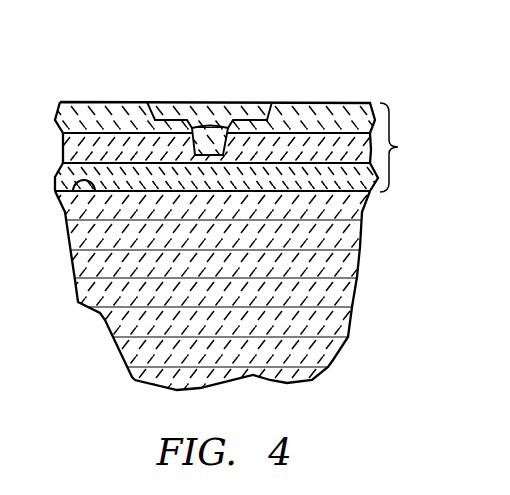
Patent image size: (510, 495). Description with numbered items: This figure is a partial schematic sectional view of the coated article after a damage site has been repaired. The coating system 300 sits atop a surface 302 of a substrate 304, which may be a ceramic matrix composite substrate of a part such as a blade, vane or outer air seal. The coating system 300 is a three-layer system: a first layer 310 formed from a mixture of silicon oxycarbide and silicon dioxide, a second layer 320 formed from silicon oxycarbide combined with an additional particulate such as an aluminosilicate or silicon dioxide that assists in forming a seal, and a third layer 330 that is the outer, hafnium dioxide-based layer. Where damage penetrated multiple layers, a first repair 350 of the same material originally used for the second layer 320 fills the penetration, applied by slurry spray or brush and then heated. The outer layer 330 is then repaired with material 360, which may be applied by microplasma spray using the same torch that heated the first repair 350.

The coating system 300 is at (416, 147).
The surface 302 is at (64, 214).
The substrate 304 is at (362, 324).
The first layer 310 is at (122, 177).
The second layer 320 is at (342, 147).
The third layer 330 is at (278, 112).
The first repair 350 is at (203, 135).
The material 360 is at (213, 110).